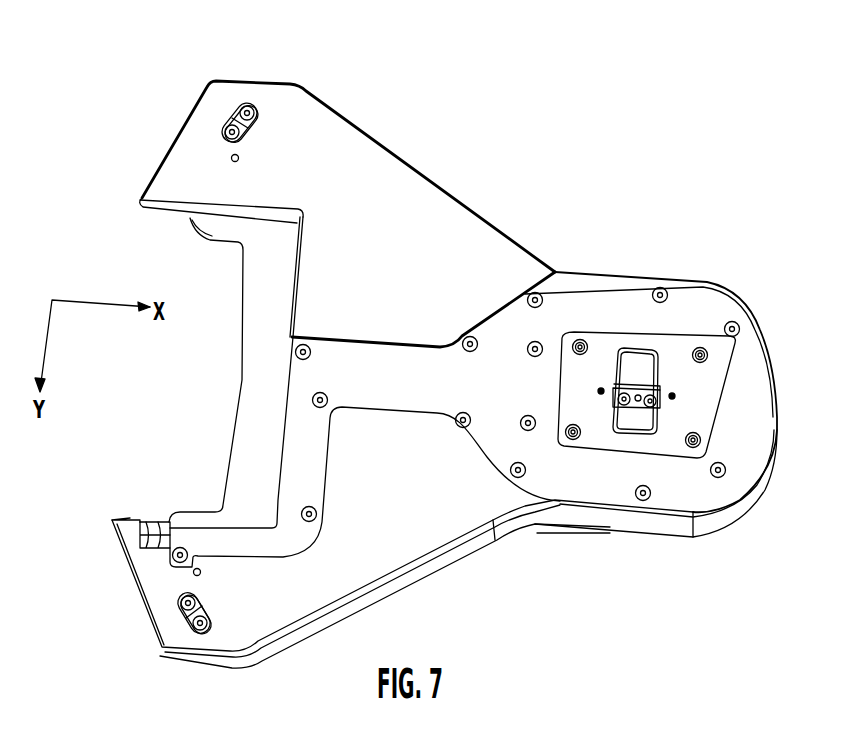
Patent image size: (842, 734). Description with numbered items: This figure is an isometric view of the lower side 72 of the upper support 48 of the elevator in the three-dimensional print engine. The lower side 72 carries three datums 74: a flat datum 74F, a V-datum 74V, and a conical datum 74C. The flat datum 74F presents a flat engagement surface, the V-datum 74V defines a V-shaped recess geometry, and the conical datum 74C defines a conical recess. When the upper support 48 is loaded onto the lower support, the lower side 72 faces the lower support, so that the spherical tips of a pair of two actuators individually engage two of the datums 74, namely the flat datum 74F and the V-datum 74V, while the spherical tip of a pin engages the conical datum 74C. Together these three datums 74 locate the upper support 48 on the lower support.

The lower side 72 is at (472, 272).
The upper support 48 is at (602, 212).
The datums 74 is at (396, 368).
The flat datum 74F is at (230, 122).
The V-datum 74V is at (187, 618).
The conical datum 74C is at (640, 398).